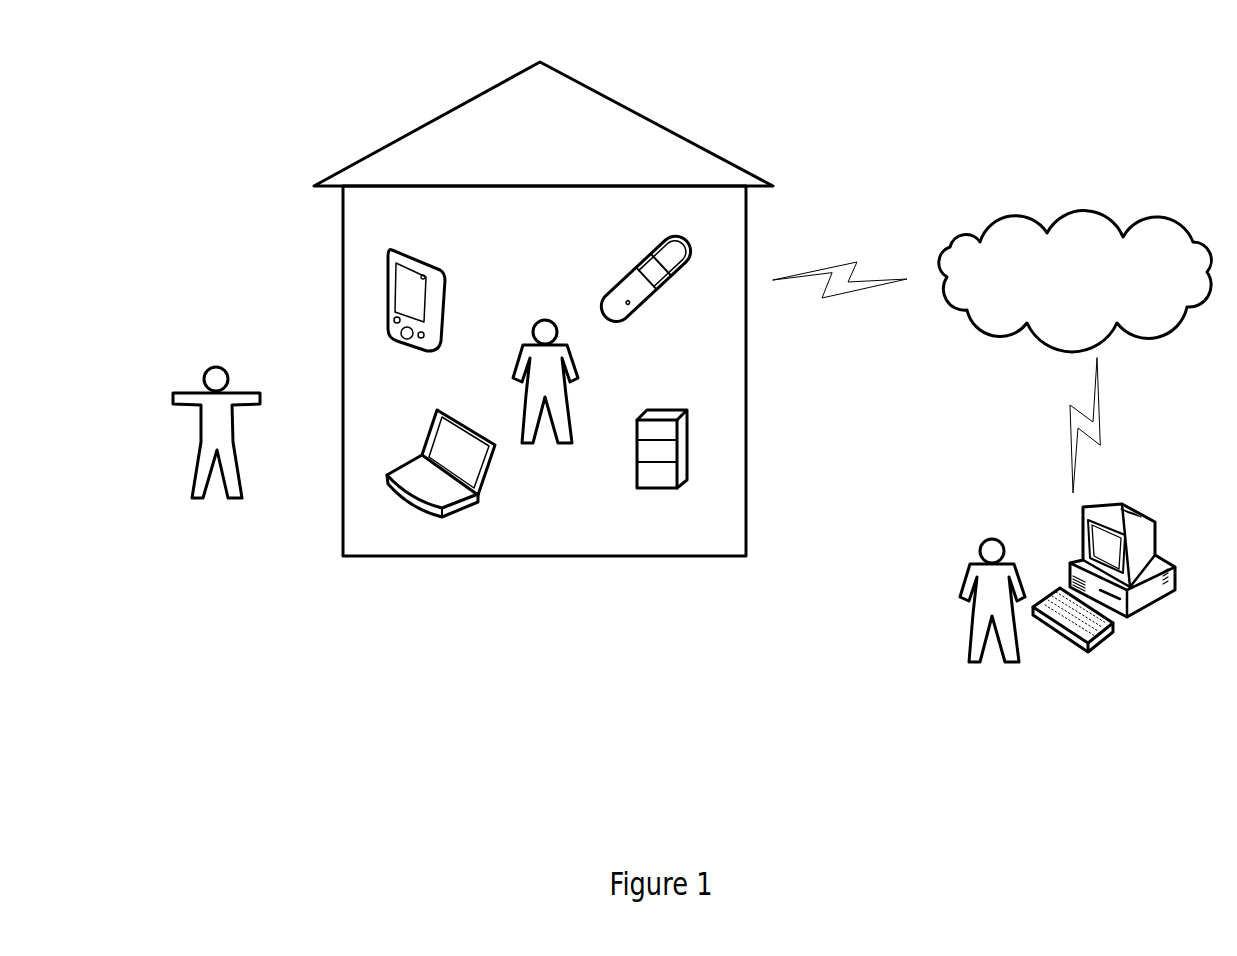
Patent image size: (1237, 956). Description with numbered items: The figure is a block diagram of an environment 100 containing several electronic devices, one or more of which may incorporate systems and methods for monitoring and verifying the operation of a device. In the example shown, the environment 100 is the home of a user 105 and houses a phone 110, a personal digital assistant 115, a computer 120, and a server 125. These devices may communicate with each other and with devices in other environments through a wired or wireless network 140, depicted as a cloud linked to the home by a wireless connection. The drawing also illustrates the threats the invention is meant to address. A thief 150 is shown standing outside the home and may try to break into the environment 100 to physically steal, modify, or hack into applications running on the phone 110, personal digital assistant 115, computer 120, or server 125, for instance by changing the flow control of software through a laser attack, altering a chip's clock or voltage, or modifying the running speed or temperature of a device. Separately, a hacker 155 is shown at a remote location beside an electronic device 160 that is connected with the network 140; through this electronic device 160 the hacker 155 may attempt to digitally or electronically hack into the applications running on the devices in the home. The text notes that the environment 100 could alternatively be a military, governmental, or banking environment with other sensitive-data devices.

The environment 100 is at (472, 556).
The user 105 is at (567, 443).
The phone 110 is at (627, 280).
The personal digital assistant 115 is at (420, 250).
The computer 120 is at (422, 442).
The server 125 is at (668, 410).
The network 140 is at (1075, 281).
The thief 150 is at (238, 498).
The hacker 155 is at (1013, 662).
The electronic device 160 is at (1157, 600).